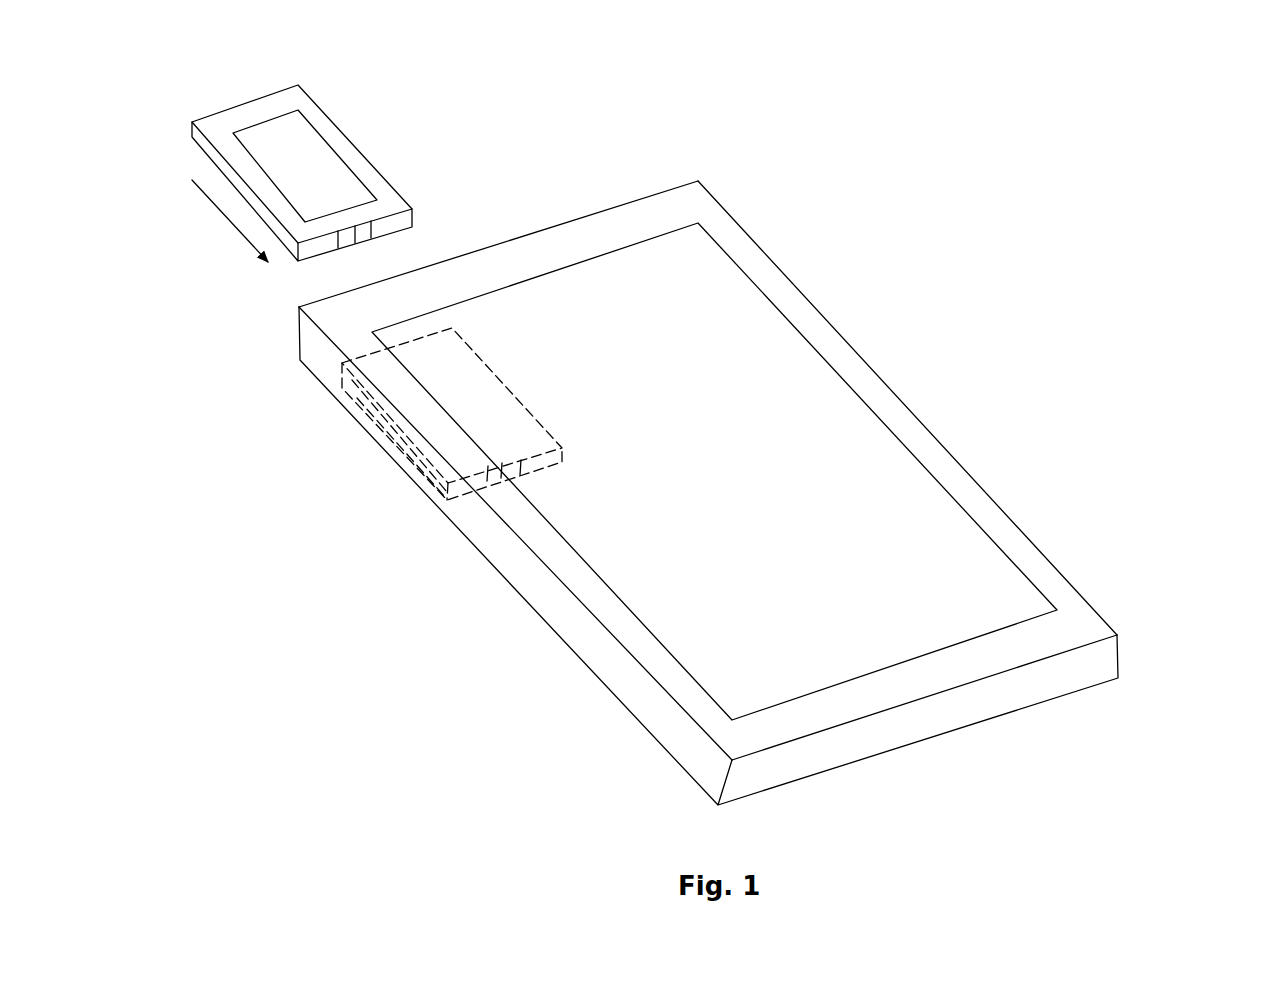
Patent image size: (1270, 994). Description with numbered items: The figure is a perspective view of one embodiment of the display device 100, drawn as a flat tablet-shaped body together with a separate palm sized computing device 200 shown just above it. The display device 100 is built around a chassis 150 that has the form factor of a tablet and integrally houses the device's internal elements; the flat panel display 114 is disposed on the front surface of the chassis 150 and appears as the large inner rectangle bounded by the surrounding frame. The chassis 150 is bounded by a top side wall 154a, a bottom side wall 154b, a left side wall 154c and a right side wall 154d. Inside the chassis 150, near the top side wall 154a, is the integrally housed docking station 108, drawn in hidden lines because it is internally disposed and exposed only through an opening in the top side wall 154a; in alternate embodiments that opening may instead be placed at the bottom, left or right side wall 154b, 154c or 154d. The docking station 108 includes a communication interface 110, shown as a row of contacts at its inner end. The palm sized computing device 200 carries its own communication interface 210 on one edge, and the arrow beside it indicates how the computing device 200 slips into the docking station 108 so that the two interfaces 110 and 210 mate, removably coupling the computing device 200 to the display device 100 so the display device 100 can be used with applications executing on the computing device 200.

The display device 100 is at (756, 467).
The docking station 108 is at (360, 398).
The communication interface 110 is at (494, 482).
The flat panel display 114 is at (983, 570).
The chassis 150 is at (756, 467).
The top side wall 154a is at (618, 182).
The bottom side wall 154b is at (953, 715).
The left side wall 154c is at (675, 738).
The right side wall 154d is at (1118, 608).
The palm sized computing device 200 is at (328, 154).
The communication interface 210 is at (368, 233).